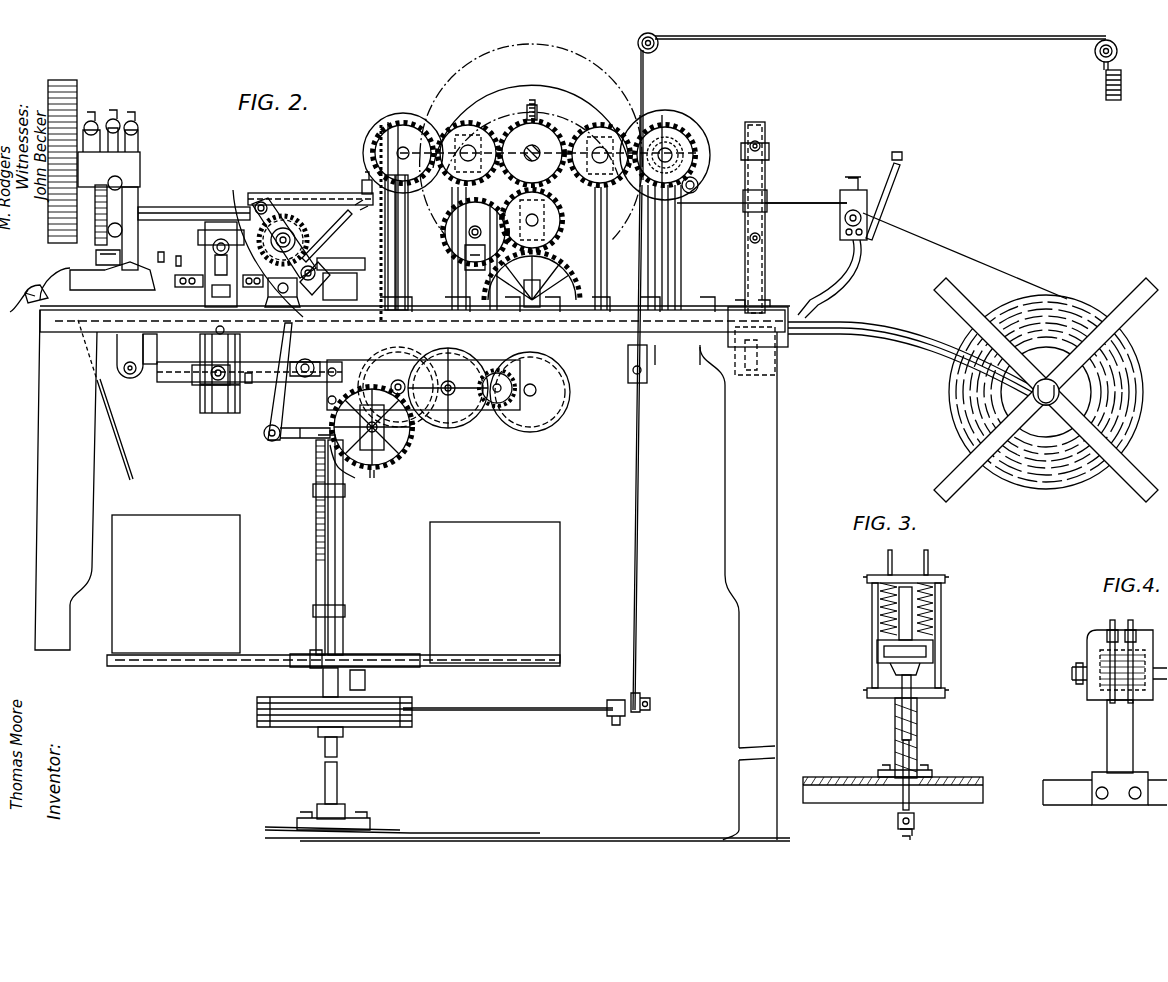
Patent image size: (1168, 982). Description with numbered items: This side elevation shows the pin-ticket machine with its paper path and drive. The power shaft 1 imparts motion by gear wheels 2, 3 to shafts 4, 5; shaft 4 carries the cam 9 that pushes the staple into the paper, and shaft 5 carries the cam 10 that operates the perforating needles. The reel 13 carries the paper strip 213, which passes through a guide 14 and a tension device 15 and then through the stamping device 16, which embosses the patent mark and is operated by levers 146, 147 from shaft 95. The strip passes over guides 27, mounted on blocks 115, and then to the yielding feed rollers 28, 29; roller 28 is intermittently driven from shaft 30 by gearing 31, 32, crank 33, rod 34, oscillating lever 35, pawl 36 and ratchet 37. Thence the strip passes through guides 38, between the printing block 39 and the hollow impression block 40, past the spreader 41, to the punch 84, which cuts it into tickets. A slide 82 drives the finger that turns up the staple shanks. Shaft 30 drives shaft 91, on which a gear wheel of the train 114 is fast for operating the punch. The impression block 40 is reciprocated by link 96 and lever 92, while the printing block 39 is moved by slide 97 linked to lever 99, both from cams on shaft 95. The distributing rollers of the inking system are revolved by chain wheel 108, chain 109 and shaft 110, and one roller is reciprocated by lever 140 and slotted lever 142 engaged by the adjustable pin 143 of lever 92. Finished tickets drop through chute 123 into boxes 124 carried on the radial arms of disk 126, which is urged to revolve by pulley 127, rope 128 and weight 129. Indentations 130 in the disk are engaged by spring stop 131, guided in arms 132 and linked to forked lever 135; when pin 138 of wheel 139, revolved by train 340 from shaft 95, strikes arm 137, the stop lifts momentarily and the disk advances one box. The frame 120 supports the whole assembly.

In FIG. 2, the power shaft 1 is at (540, 150).
In FIG. 2, the gear wheel 2 is at (672, 142).
In FIG. 2, the gear wheel 3 is at (375, 148).
In FIG. 2, the shaft 4 is at (674, 156).
In FIG. 2, the shaft 5 is at (403, 147).
In FIG. 2, the cam 9 is at (666, 155).
In FIG. 2, the cam 10 is at (403, 148).
In FIG. 2, the reel 13 is at (1046, 390).
In FIG. 2, the guide 14 is at (870, 238).
In FIG. 4, the guide 14 is at (1108, 633).
In FIG. 2, the tension device 15 is at (832, 243).
In FIG. 4, the tension device 15 is at (1095, 650).
In FIG. 2, the stamping device 16 is at (763, 217).
In FIG. 3, the stamping device 16 is at (893, 695).
In FIG. 2, the guides 27 is at (305, 242).
In FIG. 2, the feed roller 28 is at (266, 242).
In FIG. 2, the feed roller 29 is at (290, 300).
In FIG. 2, the shaft 30 is at (548, 212).
In FIG. 2, the gearing 31 is at (540, 220).
In FIG. 2, the gearing 32 is at (460, 252).
In FIG. 2, the crank 33 is at (470, 260).
In FIG. 2, the rod 34 is at (327, 277).
In FIG. 2, the oscillating lever 35 is at (300, 254).
In FIG. 2, the pawl 36 is at (262, 202).
In FIG. 2, the ratchet 37 is at (300, 193).
In FIG. 2, the paper guide 38 is at (183, 254).
In FIG. 2, the printing block 39 is at (176, 281).
In FIG. 2, the impression block 40 is at (205, 243).
In FIG. 2, the spreader 41 is at (160, 251).
In FIG. 2, the slide 82 is at (362, 186).
In FIG. 2, the punch 84 is at (100, 256).
In FIG. 2, the shaft 91 is at (160, 209).
In FIG. 2, the lever 92 is at (248, 383).
In FIG. 2, the shaft 95 is at (535, 394).
In FIG. 2, the link 96 is at (218, 350).
In FIG. 2, the slide 97 is at (218, 388).
In FIG. 2, the lever 99 is at (195, 376).
In FIG. 2, the chain wheel 108 is at (378, 160).
In FIG. 2, the chain 109 is at (392, 240).
In FIG. 2, the shaft 110 is at (341, 279).
In FIG. 2, the gear train 114 is at (95, 215).
In FIG. 2, the bevel gear 115 is at (335, 231).
In FIG. 2, the frame 120 is at (40, 322).
In FIG. 2, the chute 123 is at (112, 400).
In FIG. 2, the boxes 124 is at (336, 589).
In FIG. 2, the hub or disk 126 is at (352, 655).
In FIG. 2, the pulley 127 is at (390, 700).
In FIG. 2, the rope 128 is at (754, 379).
In FIG. 2, the weight 129 is at (1099, 70).
In FIG. 2, the indentations 130 is at (314, 652).
In FIG. 2, the spring stop 131 is at (318, 567).
In FIG. 2, the arms 132 is at (340, 490).
In FIG. 2, the forked lever 135 is at (303, 440).
In FIG. 2, the arm 137 is at (287, 438).
In FIG. 2, the pin 138 is at (372, 472).
In FIG. 2, the wheel 139 is at (404, 450).
In FIG. 2, the lever 140 is at (145, 352).
In FIG. 2, the slotted lever 142 is at (242, 372).
In FIG. 2, the adjustable pin 143 is at (303, 378).
In FIG. 2, the lever 146 is at (672, 376).
In FIG. 2, the lever 147 is at (760, 352).
In FIG. 2, the paper strip 213 is at (965, 256).
In FIG. 2, the gear train 340 is at (448, 395).